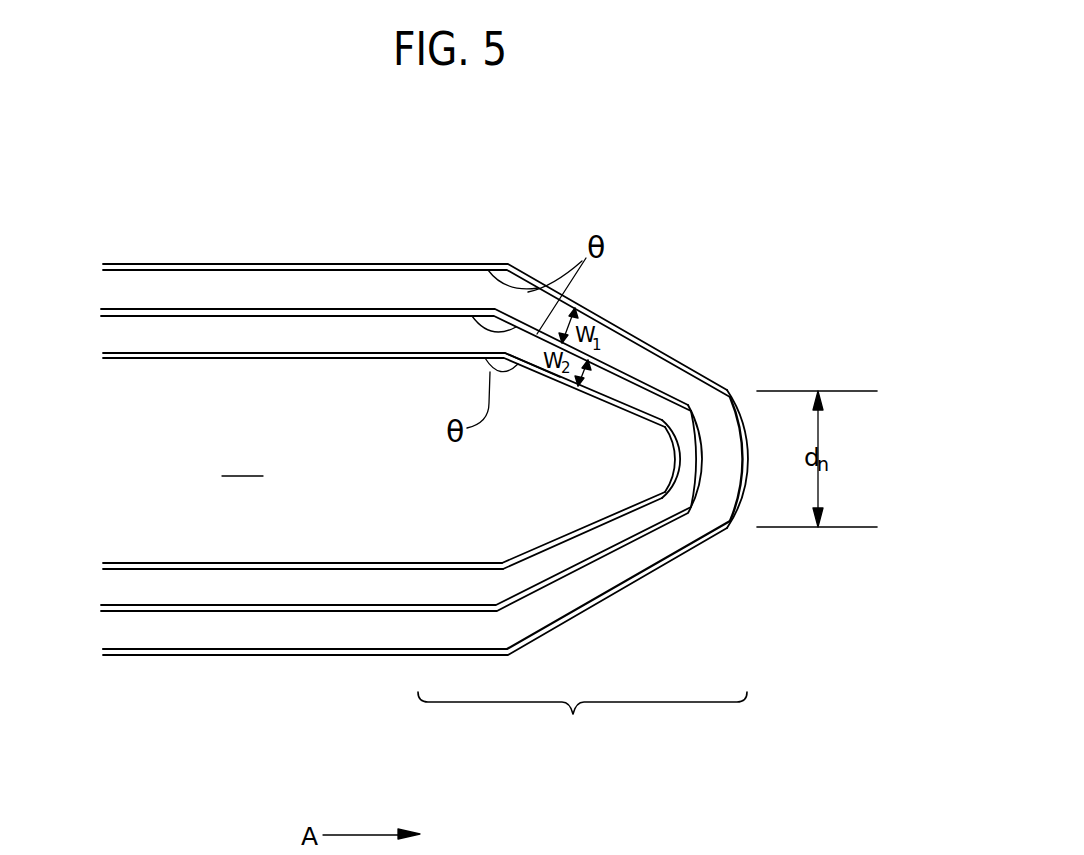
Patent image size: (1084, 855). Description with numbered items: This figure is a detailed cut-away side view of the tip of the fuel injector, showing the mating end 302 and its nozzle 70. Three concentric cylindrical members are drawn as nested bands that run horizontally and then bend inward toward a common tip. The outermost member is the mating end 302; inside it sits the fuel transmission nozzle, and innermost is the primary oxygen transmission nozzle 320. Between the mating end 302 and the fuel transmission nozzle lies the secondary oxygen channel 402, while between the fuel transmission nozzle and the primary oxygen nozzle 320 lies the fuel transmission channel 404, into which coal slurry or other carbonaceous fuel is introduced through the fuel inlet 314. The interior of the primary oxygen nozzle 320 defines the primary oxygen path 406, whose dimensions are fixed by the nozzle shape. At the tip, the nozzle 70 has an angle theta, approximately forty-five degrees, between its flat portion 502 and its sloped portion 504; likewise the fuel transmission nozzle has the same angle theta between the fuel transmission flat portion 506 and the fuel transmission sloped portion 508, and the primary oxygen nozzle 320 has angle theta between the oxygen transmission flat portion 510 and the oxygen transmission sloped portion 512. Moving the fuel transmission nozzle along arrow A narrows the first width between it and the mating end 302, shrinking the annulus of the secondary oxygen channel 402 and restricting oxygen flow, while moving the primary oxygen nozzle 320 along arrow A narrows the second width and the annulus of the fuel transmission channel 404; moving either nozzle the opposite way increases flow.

The mating end 302 is at (197, 658).
The fuel inlet 314 is at (323, 612).
The primary oxygen transmission nozzle 320 is at (272, 563).
The secondary oxygen channel 402 is at (380, 275).
The fuel transmission channel 404 is at (220, 342).
The primary oxygen path 406 is at (242, 460).
The flat portion 502 is at (492, 263).
The sloped portion 504 is at (693, 368).
The fuel transmission flat portion 506 is at (353, 316).
The fuel transmission sloped portion 508 is at (627, 412).
The oxygen transmission flat portion 510 is at (460, 358).
The oxygen transmission sloped portion 512 is at (545, 372).
The nozzle 70 is at (582, 723).